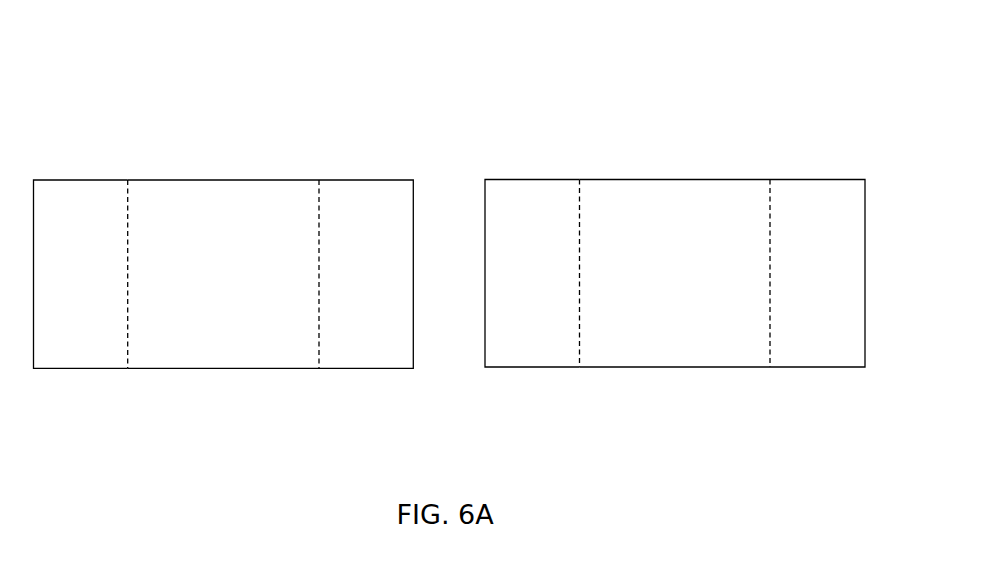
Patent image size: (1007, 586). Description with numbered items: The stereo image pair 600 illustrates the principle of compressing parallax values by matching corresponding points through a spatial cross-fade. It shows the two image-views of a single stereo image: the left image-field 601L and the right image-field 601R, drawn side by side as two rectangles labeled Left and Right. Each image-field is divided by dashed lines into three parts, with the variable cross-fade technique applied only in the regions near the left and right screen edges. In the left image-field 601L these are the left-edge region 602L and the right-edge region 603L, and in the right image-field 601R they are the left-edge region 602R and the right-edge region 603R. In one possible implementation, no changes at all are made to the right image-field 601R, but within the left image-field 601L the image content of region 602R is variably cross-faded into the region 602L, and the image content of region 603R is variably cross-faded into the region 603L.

The display pattern for left and right eye views 600 is at (734, 68).
The left image-field 601L is at (190, 372).
The left-edge region of left image-field 602L is at (68, 323).
The right-edge region of left image-field 603L is at (362, 319).
The right image-field 601R is at (635, 374).
The left-edge region of right image-field 602R is at (513, 323).
The right-edge region of right image-field 603R is at (807, 319).